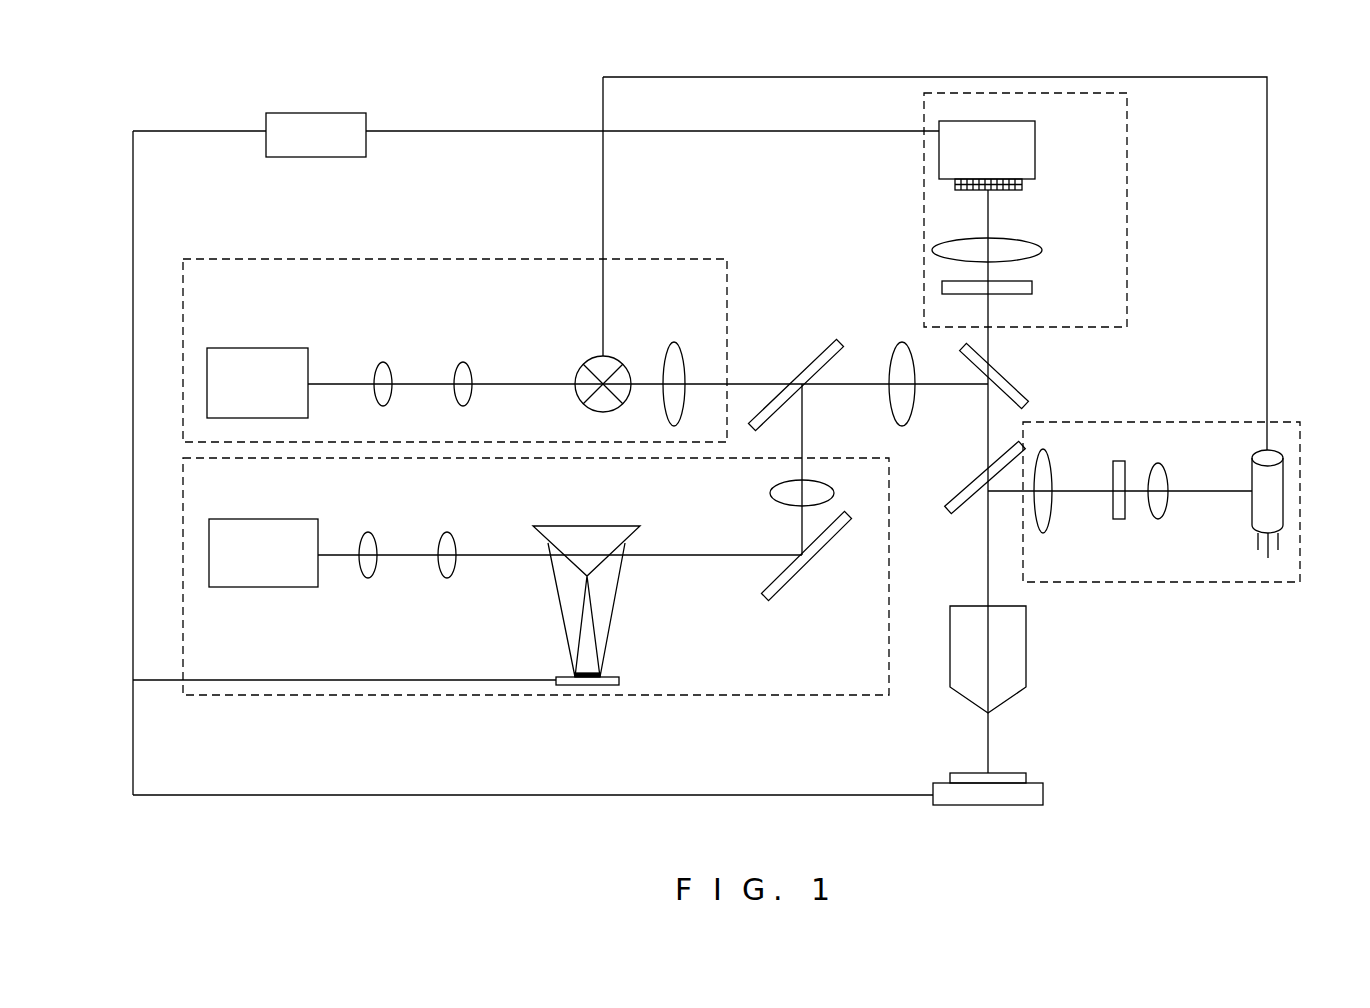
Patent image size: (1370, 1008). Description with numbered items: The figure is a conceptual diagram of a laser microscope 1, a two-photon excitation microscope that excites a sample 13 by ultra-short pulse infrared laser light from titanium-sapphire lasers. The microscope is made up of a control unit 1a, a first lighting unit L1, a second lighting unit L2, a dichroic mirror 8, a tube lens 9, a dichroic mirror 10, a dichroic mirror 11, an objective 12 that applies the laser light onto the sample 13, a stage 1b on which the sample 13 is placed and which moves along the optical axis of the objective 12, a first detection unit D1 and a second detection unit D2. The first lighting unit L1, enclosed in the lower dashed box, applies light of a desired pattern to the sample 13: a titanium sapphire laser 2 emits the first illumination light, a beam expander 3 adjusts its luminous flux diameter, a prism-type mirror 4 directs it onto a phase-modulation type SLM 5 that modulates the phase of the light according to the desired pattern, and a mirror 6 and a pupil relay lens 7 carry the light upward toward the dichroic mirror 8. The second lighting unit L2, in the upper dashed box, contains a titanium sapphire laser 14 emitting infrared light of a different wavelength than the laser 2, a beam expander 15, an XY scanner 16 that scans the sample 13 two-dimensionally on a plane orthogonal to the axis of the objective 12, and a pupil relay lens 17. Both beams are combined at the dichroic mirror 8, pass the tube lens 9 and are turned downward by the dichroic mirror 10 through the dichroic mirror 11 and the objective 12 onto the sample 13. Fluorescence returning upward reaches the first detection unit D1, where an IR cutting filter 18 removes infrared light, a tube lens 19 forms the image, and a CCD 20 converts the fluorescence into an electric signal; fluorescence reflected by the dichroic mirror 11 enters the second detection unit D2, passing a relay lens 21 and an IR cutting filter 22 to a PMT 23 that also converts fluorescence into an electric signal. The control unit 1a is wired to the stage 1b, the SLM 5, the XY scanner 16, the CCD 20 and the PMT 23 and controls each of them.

The laser microscope 1 is at (1365, 81).
The control unit 1a is at (333, 113).
The stage 1b is at (1035, 798).
The titanium sapphire laser 2 is at (262, 530).
The beam expander 3 is at (466, 583).
The prism-type mirror 4 is at (582, 530).
The phase-modulation type SLM 5 is at (588, 688).
The mirror 6 is at (768, 600).
The pupil relay lens 7 is at (825, 490).
The dichroic mirror 8 is at (832, 346).
The tube lens 9 is at (904, 348).
The dichroic mirror 10 is at (1028, 400).
The dichroic mirror 11 is at (955, 515).
The objective 12 is at (1015, 655).
The sample 13 is at (1015, 773).
The titanium sapphire laser 14 is at (256, 362).
The beam expander 15 is at (484, 345).
The XY scanner 16 is at (616, 358).
The pupil relay lens 17 is at (676, 350).
The IR cutting filter 18 is at (1028, 292).
The tube lens 19 is at (1028, 255).
The CCD 20 is at (1018, 155).
The relay lens 21 is at (1188, 530).
The IR cutting filter 22 is at (1120, 462).
The PMT 23 is at (1272, 456).
The first detection unit D1 is at (1127, 190).
The second detection unit D2 is at (1170, 422).
The first lighting unit L1 is at (425, 695).
The second lighting unit L2 is at (484, 259).